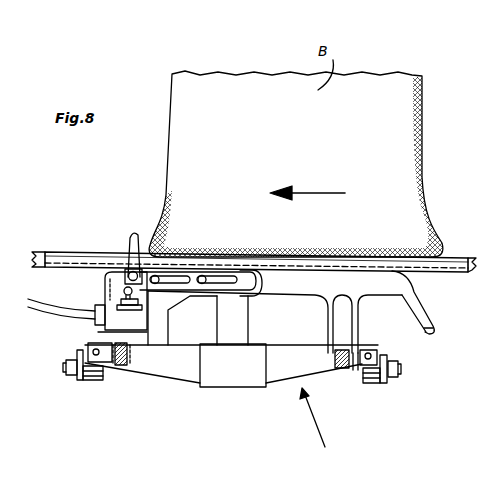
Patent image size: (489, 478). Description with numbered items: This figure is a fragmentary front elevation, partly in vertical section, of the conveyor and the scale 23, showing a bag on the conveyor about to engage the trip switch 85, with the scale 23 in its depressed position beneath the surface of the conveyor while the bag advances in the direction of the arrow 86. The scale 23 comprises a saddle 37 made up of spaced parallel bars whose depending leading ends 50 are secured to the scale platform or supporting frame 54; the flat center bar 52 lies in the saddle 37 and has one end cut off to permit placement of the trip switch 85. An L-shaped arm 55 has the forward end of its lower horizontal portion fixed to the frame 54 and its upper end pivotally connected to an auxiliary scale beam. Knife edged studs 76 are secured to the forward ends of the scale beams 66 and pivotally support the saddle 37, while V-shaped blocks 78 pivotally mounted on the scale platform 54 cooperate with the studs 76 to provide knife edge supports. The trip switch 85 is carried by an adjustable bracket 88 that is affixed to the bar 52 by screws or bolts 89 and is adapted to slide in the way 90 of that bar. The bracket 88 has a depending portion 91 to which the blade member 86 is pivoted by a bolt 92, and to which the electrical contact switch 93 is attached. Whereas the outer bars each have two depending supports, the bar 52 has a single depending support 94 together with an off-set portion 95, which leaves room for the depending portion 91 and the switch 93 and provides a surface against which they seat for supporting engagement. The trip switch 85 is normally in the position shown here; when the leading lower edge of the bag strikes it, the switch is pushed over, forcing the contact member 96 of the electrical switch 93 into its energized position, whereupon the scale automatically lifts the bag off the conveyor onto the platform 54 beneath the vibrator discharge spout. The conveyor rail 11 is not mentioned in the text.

The conveyor rail 11 is at (468, 257).
The scale 23 is at (318, 425).
The saddle 37 is at (378, 352).
The depending leading ends 50 is at (430, 330).
The bar 52 is at (418, 290).
The scale platform 54 is at (247, 388).
The L-shaped arm 55 is at (248, 322).
The scale beams 66 is at (389, 384).
The knife edged studs 76 is at (374, 384).
The V-shaped blocks 78 is at (368, 352).
The trip switch 85 is at (133, 230).
The blade member 86 is at (322, 189).
The adjustable bracket 88 is at (197, 271).
The bolts 89 is at (160, 273).
The way 90 is at (250, 268).
The depending portion 91 is at (105, 289).
The bolt 92 is at (126, 270).
The electrical contact switch 93 is at (112, 302).
The depending support 94 is at (338, 320).
The off-set portion 95 is at (166, 318).
The contact member 96 is at (124, 290).